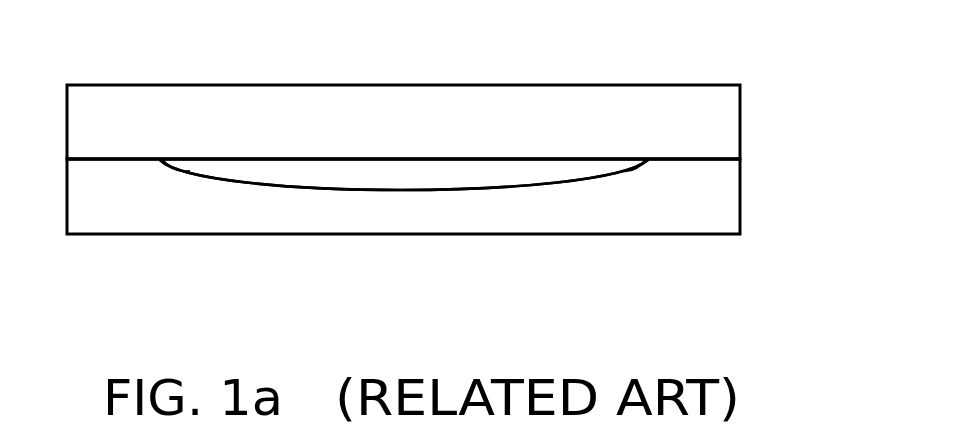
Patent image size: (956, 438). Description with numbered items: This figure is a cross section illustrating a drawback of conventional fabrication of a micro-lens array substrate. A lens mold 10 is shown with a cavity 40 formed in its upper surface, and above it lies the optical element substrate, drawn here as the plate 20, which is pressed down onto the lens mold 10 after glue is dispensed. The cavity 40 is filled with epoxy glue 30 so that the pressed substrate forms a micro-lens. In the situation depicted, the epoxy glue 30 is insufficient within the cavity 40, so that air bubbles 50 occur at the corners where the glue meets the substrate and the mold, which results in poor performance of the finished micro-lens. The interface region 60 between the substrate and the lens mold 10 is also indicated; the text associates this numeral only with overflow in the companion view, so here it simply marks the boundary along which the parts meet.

The lens mold 10 is at (565, 217).
The upper substrate 20 is at (720, 117).
The epoxy glue 30 is at (373, 178).
The cavity 40 is at (623, 172).
The air bubbles 50 is at (175, 160).
The bonding interface 60 is at (117, 157).